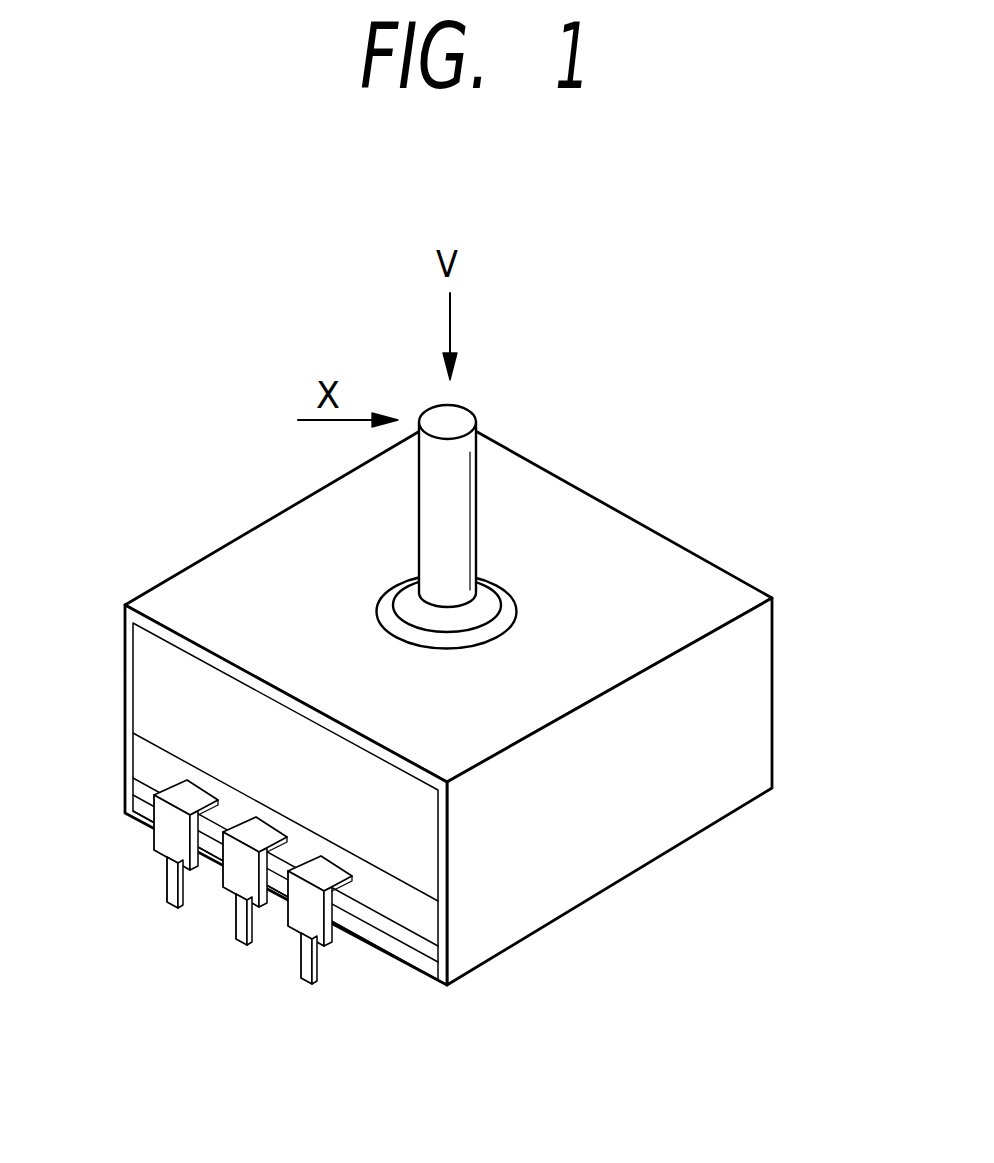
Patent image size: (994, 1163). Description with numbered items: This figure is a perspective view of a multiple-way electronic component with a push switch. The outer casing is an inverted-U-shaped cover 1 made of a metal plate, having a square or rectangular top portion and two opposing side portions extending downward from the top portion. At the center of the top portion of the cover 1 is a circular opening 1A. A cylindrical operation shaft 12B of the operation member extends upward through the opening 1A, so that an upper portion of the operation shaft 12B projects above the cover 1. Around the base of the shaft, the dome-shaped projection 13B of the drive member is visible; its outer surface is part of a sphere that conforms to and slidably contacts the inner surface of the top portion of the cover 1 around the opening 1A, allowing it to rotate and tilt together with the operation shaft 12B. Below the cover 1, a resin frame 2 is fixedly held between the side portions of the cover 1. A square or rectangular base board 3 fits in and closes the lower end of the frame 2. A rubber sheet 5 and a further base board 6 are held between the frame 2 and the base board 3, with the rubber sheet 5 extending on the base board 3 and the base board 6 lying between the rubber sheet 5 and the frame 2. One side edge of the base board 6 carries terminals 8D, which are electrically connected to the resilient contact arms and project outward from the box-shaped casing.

The cover 1 is at (727, 793).
The circular opening 1A is at (480, 634).
The operation shaft 12B is at (470, 472).
The dome-shaped projection 13B is at (483, 602).
The frame 2 is at (428, 842).
The base board 3 is at (427, 920).
The rubber sheet 5 is at (403, 937).
The base board 6 is at (370, 938).
The terminals 8D is at (237, 945).